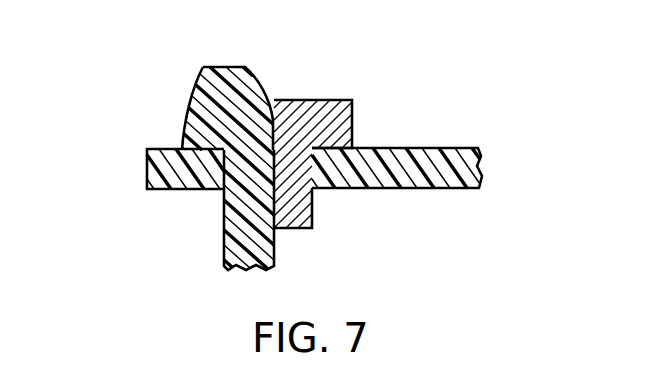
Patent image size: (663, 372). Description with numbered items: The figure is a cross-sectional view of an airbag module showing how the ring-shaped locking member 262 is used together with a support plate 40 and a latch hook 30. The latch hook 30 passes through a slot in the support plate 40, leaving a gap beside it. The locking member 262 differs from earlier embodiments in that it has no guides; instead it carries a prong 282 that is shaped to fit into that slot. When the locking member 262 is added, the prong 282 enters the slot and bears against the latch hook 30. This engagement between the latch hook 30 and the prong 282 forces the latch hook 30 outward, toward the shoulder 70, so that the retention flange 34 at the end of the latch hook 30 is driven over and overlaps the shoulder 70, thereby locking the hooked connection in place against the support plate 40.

The latch hook 30 is at (171, 141).
The retention flange 34 is at (192, 100).
The support plate 40 is at (458, 147).
The shoulder 70 is at (168, 170).
The locking member 262 is at (370, 154).
The prong 282 is at (295, 200).